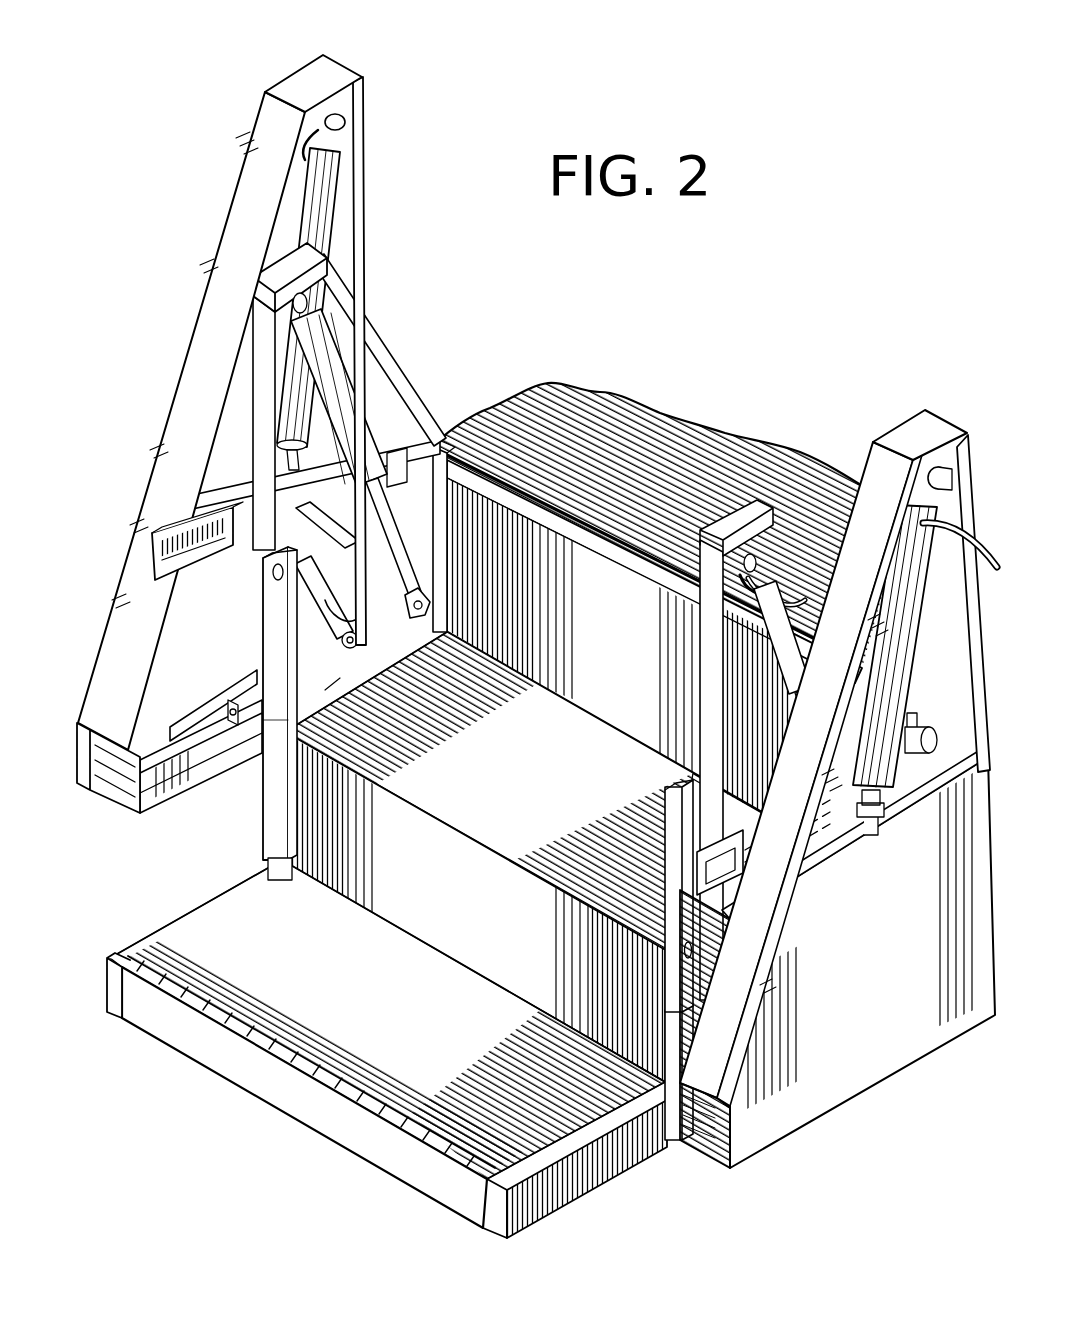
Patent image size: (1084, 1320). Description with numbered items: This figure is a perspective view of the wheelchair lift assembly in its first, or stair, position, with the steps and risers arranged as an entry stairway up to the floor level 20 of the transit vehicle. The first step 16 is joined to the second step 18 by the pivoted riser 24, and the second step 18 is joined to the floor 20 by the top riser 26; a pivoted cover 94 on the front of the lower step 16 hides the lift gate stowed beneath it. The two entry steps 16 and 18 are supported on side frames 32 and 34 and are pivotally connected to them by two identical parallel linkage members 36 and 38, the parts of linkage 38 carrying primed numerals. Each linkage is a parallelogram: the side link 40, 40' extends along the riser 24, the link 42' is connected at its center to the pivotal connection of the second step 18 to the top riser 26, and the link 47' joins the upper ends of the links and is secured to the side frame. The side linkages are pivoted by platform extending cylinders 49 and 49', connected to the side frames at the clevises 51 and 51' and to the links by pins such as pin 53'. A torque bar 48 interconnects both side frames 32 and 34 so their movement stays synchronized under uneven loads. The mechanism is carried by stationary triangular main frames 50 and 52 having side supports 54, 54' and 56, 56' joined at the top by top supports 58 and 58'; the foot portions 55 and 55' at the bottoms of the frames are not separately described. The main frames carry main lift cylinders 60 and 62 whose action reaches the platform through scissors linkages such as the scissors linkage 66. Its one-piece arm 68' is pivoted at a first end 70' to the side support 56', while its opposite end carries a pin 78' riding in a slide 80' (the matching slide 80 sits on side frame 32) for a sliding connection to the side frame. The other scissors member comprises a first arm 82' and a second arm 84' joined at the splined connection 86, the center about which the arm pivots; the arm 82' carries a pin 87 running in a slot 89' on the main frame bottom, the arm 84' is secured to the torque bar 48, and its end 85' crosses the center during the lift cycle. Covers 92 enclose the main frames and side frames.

The first step 16 is at (385, 1035).
The second step 18 is at (531, 777).
The floor level 20 is at (600, 500).
The riser 24 is at (474, 918).
The top riser 26 is at (611, 638).
The side frame 32 is at (760, 498).
The side frame 34 is at (404, 350).
The linkage member 36 is at (668, 1018).
The linkage member 38 is at (253, 744).
The side link 40 is at (642, 896).
The side link 40' is at (258, 713).
The link 42' is at (456, 510).
The link 47' is at (406, 475).
The torque bar 48 is at (930, 735).
The platform extending cylinder 49 is at (786, 673).
The platform extending cylinder 49' is at (362, 443).
The main frame 50 is at (847, 758).
The clevis 51 is at (752, 696).
The clevis 51' is at (334, 396).
The main frame 52 is at (254, 425).
The pin 53' is at (403, 618).
The side support 54 is at (801, 782).
The side support 54' is at (191, 421).
The base foot 55 is at (762, 1124).
The base foot 55' is at (137, 776).
The side support 56 is at (966, 603).
The side support 56' is at (390, 361).
The top support 58 is at (904, 419).
The top support 58' is at (298, 75).
The main lift cylinder 60 is at (905, 612).
The main lift cylinder 62 is at (323, 196).
The scissors linkage 66 is at (255, 605).
The arm 68' is at (326, 636).
The first end 70' is at (358, 695).
The pin 78' is at (280, 452).
The slide 80 is at (790, 847).
The slide 80' is at (163, 538).
The first arm 82' is at (201, 739).
The second arm 84' is at (363, 525).
The end 85' is at (387, 350).
The splined connection 86 is at (333, 574).
The pin 87 is at (235, 726).
The slot 89' is at (120, 693).
The covers 92 is at (889, 978).
The pivoted cover 94 is at (320, 1128).